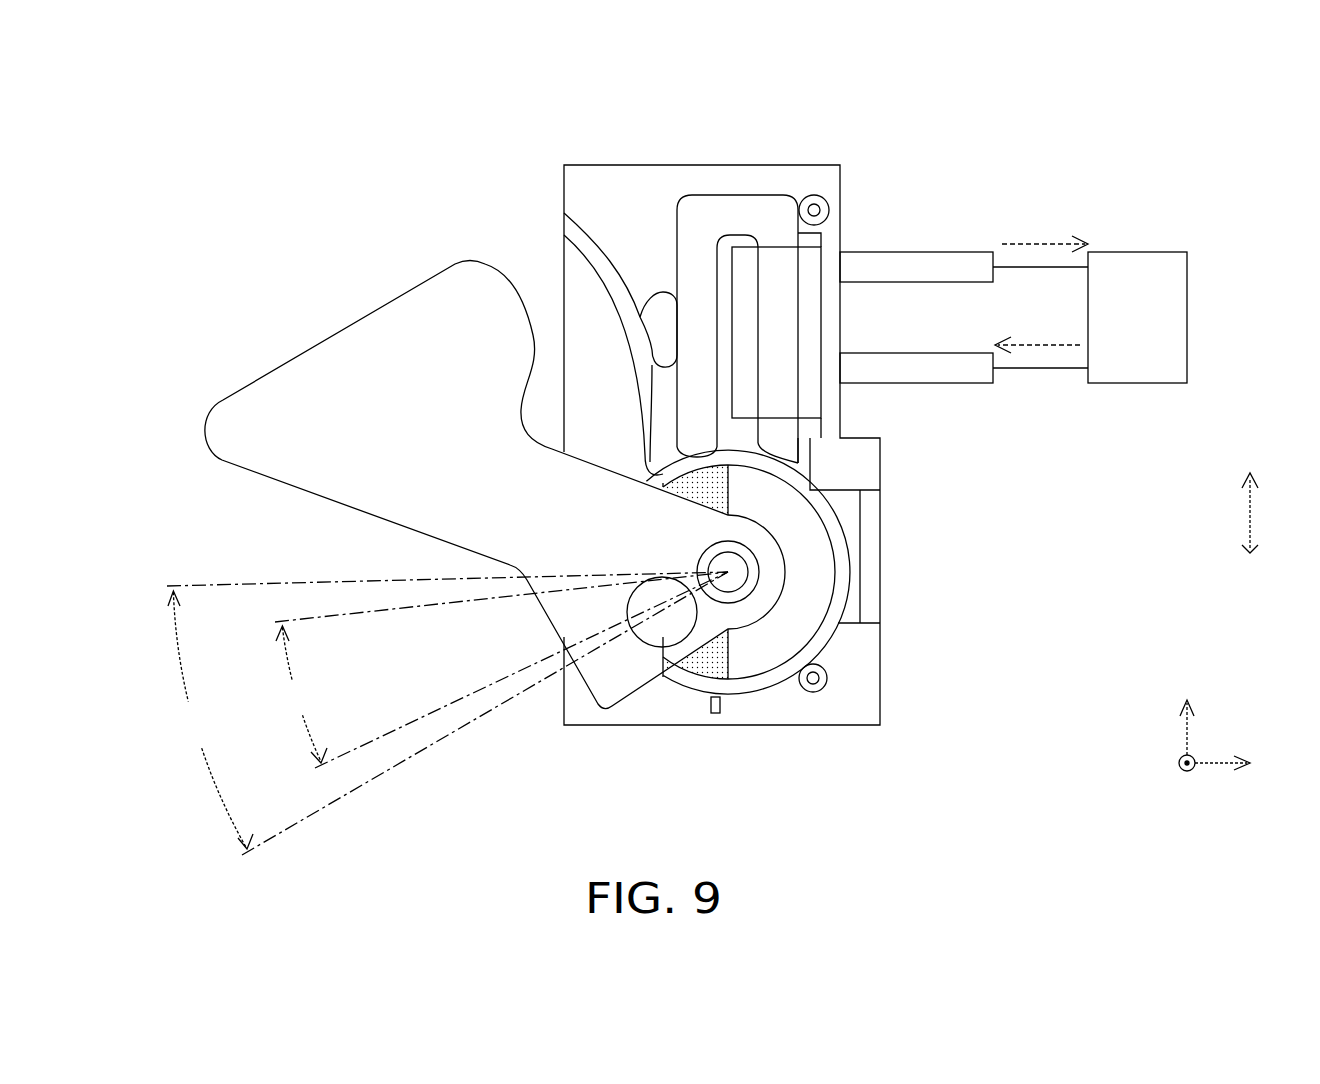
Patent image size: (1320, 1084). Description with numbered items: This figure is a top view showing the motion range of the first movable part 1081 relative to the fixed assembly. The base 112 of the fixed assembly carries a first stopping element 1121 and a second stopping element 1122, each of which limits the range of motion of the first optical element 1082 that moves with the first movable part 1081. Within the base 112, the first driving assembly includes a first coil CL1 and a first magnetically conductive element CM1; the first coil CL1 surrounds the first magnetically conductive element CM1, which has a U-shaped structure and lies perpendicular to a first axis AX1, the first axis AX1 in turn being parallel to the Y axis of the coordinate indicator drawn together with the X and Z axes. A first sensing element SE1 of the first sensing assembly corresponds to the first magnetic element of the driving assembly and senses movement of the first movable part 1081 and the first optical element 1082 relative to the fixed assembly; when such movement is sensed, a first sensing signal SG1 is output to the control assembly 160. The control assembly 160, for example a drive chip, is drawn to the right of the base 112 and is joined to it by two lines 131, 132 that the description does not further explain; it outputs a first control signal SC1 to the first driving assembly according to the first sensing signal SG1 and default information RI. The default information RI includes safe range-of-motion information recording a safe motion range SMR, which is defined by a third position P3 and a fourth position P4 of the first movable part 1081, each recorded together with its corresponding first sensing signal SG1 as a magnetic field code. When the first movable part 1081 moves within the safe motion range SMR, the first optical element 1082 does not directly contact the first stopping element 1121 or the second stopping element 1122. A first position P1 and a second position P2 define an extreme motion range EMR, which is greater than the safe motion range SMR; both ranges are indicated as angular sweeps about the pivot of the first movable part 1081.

The base 112 is at (831, 162).
The first stopping element 1121 is at (687, 703).
The second stopping element 1122 is at (662, 317).
The first magnetically conductive element CM1 is at (717, 212).
The first coil CL1 is at (812, 310).
The first wire 131 is at (910, 268).
The second wire 132 is at (912, 370).
The control assembly 160 is at (1160, 318).
The default information RI is at (1021, 196).
The first sensing signal SG1 is at (1045, 233).
The first control signal SC1 is at (1037, 333).
The first axis AX1 is at (1252, 498).
The first optical element 1082 is at (395, 341).
The first movable part 1081 is at (660, 627).
The first sensing element SE1 is at (718, 716).
The first position P1 is at (469, 725).
The second position P2 is at (426, 588).
The third position P3 is at (505, 684).
The fourth position P4 is at (483, 608).
The extreme motion range EMR is at (207, 720).
The safe motion range SMR is at (295, 694).
The X axis X is at (1235, 764).
The Y axis Y is at (1187, 714).
The Z axis Z is at (1171, 764).